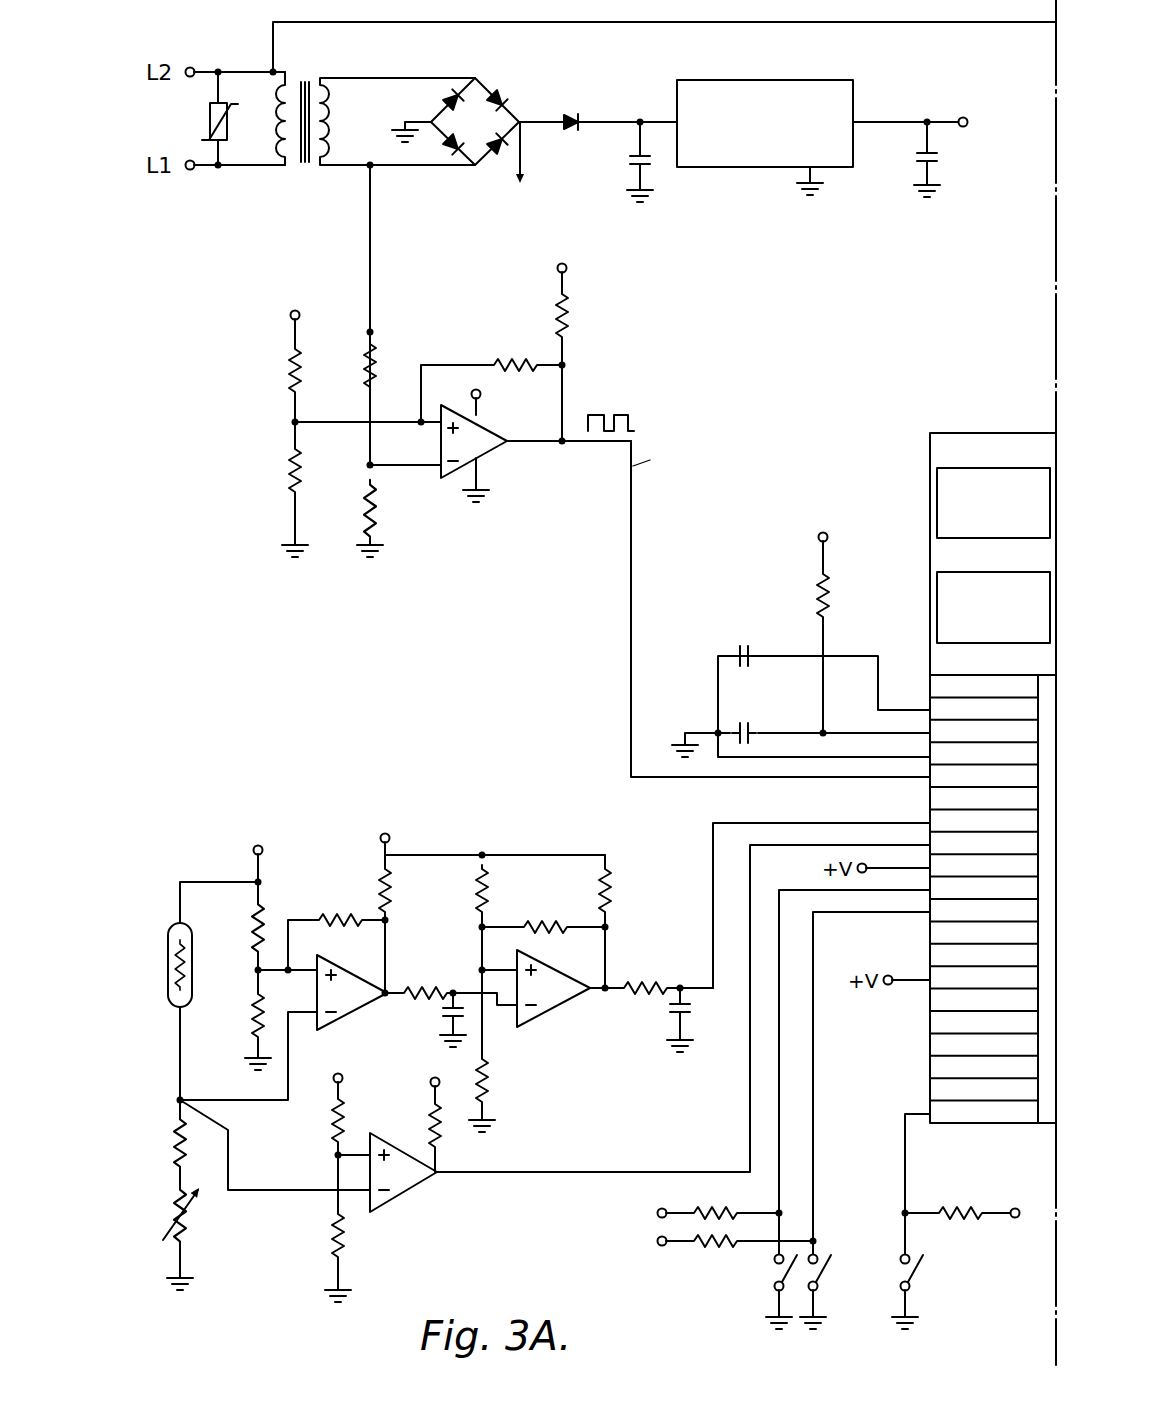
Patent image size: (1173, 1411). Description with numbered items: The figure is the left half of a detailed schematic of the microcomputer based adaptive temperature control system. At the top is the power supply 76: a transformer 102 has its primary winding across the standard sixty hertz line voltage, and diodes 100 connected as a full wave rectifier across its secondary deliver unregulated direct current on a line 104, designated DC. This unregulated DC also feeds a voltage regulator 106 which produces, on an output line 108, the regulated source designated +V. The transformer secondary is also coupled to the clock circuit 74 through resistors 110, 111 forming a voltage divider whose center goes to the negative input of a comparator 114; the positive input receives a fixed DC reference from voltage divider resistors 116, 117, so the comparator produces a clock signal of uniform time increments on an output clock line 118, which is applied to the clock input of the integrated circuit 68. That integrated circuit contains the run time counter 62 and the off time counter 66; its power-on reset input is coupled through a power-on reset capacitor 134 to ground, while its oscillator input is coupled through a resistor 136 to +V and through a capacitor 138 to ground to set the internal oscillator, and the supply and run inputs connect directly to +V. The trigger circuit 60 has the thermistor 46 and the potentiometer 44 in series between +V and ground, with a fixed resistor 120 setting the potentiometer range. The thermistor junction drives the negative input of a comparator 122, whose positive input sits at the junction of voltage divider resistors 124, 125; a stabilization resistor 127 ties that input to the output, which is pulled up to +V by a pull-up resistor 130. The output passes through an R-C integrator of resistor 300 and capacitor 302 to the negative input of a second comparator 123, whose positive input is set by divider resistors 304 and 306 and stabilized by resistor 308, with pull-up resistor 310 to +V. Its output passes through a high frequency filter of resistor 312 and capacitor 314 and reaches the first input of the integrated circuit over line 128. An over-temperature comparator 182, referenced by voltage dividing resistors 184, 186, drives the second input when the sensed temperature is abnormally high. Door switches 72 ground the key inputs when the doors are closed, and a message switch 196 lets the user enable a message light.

The transformer 102 is at (324, 75).
The diodes 100 is at (455, 121).
The power supply 76 is at (592, 92).
The line 104 is at (523, 157).
The voltage regulator 106 is at (762, 81).
The output line 108 is at (941, 117).
The resistor 110 is at (375, 343).
The resistor 111 is at (378, 515).
The comparator 114 is at (491, 452).
The clock circuit 74 is at (425, 397).
The voltage divider resistor 116 is at (282, 376).
The voltage divider resistor 117 is at (284, 488).
The output clock line 118 is at (630, 563).
The integrated circuit 68 is at (993, 761).
The run time counter 62 is at (1006, 468).
The off time counter 66 is at (997, 572).
The power-on reset capacitor 134 is at (742, 645).
The resistor 136 is at (828, 602).
The capacitor 138 is at (742, 722).
The thermistor 46 is at (167, 935).
The voltage divider resistor 124 is at (253, 926).
The voltage divider resistor 125 is at (255, 987).
The trigger circuit 60 is at (235, 943).
The stabilization resistor 127 is at (325, 915).
The pull-up resistor 130 is at (390, 886).
The resistor 300 is at (426, 984).
The comparator 122 is at (355, 1003).
The capacitor 302 is at (445, 1022).
The resistor 304 is at (487, 886).
The stabilization resistor 308 is at (527, 925).
The pull-up resistor 310 is at (612, 889).
The resistor 306 is at (490, 1099).
The second comparator 123 is at (548, 1004).
The resistor 312 is at (631, 978).
The capacitor 314 is at (668, 1014).
The output line 128 is at (713, 908).
The fixed resistor 120 is at (176, 1146).
The potentiometer 44 is at (190, 1228).
The voltage dividing resistor 184 is at (333, 1119).
The voltage dividing resistor 186 is at (333, 1241).
The comparator 182 is at (395, 1196).
The door switches 72 is at (740, 1282).
The message switch 196 is at (915, 1278).